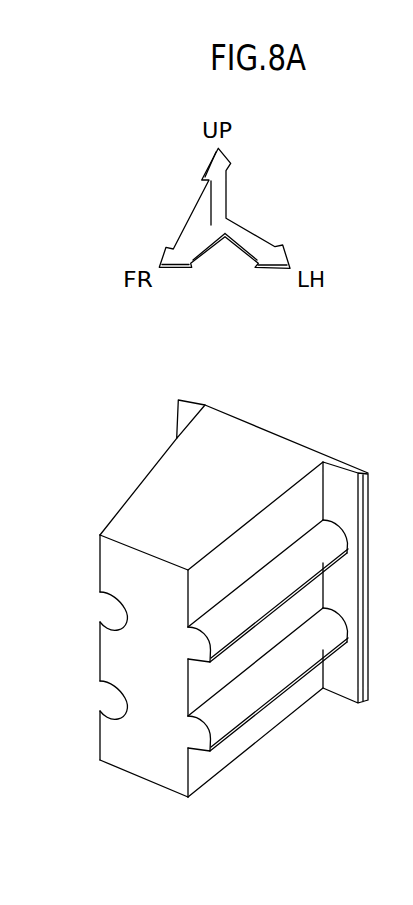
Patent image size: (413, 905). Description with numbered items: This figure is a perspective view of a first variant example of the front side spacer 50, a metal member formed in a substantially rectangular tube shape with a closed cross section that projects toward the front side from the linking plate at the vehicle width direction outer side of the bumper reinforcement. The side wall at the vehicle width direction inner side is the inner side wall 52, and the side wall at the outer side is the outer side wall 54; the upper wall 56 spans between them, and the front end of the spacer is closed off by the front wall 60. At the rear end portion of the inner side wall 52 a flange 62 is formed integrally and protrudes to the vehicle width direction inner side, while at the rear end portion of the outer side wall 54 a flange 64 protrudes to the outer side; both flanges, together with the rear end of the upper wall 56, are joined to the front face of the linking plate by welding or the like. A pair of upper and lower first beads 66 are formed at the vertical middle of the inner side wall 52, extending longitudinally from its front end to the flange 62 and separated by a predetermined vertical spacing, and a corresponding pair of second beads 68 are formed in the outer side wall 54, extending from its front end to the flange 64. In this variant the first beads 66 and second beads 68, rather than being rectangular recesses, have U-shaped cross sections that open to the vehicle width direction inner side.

The front side spacer 50 is at (129, 778).
The inner side wall 52 is at (92, 746).
The outer side wall 54 is at (211, 775).
The upper wall 56 is at (263, 447).
The front wall 60 is at (140, 570).
The flange 62 is at (185, 415).
The flange 64 is at (341, 480).
The first beads 66 is at (113, 607).
The second beads 68 is at (328, 538).